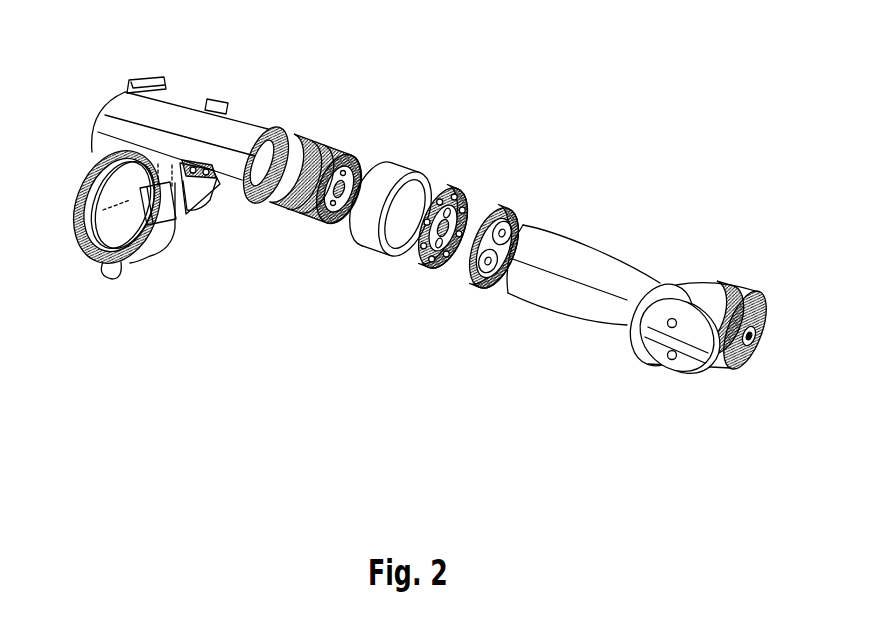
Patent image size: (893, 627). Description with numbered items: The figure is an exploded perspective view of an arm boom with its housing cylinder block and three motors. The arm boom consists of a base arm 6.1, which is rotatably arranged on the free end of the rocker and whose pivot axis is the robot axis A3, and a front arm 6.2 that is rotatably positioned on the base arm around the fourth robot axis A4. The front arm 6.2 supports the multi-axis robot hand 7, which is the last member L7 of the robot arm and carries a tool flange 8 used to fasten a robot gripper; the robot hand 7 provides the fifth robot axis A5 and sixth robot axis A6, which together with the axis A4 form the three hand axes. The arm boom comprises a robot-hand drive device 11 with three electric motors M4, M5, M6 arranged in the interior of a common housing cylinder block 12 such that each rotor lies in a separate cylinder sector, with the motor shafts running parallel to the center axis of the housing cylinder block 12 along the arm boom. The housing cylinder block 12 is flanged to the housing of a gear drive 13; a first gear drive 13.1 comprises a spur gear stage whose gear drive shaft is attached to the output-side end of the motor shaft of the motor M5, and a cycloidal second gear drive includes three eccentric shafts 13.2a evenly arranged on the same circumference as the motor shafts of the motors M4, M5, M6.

The base arm 6.1 is at (186, 108).
The front arm 6.2 is at (610, 295).
The robot-hand drive device 11 is at (386, 192).
The housing cylinder block 12 is at (355, 160).
The gear drive 13 is at (475, 198).
The first gear drive 13.1 is at (453, 185).
The eccentric shafts 13.2a is at (512, 216).
The electric motor M4 is at (327, 150).
The electric motor M5 is at (307, 212).
The electric motor M6 is at (283, 207).
The robot axis A3 is at (72, 220).
The fourth robot axis A4 is at (553, 272).
The fifth robot axis A5 is at (640, 352).
The sixth robot axis A6 is at (768, 355).
The robot hand 7 is at (674, 367).
The member L7 is at (674, 367).
The tool flange 8 is at (674, 354).